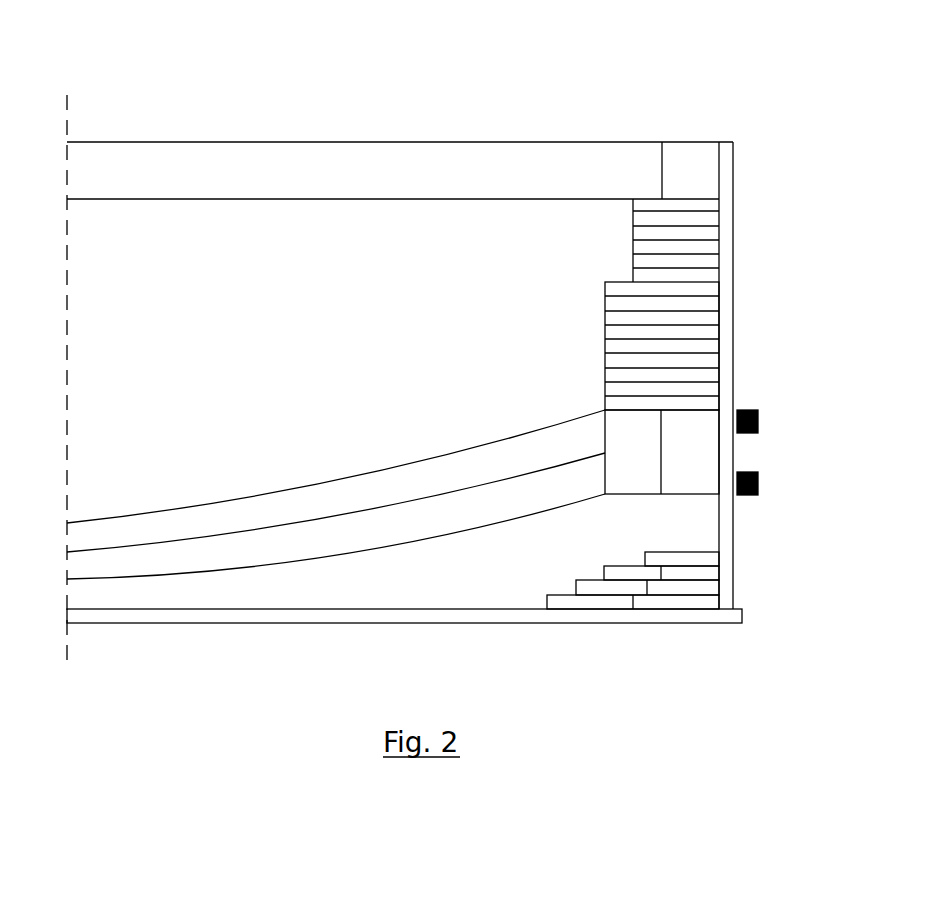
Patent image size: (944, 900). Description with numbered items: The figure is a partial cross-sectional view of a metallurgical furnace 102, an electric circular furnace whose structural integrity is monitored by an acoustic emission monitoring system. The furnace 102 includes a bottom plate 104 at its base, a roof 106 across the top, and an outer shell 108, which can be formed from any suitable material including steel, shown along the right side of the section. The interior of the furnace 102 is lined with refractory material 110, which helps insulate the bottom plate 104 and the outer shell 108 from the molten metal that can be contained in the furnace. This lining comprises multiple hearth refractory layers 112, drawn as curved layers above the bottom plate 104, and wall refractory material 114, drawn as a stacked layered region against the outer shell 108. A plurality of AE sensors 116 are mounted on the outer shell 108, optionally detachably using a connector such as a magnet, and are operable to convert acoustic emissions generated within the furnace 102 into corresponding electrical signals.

The metallurgical furnace 102 is at (633, 57).
The bottom plate 104 is at (178, 614).
The roof 106 is at (278, 172).
The outer shell 108 is at (723, 230).
The refractory material 110 is at (506, 334).
The hearth refractory layers 112 is at (367, 575).
The wall refractory material 114 is at (622, 293).
The AE sensors 116 is at (758, 420).